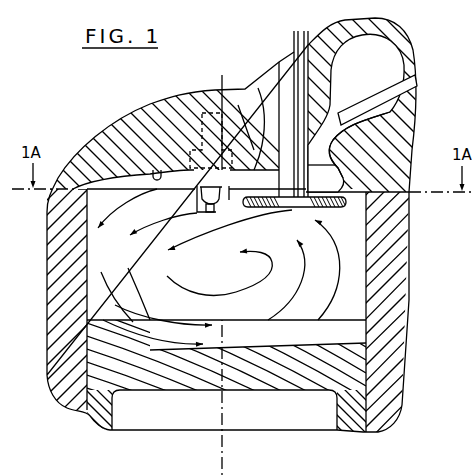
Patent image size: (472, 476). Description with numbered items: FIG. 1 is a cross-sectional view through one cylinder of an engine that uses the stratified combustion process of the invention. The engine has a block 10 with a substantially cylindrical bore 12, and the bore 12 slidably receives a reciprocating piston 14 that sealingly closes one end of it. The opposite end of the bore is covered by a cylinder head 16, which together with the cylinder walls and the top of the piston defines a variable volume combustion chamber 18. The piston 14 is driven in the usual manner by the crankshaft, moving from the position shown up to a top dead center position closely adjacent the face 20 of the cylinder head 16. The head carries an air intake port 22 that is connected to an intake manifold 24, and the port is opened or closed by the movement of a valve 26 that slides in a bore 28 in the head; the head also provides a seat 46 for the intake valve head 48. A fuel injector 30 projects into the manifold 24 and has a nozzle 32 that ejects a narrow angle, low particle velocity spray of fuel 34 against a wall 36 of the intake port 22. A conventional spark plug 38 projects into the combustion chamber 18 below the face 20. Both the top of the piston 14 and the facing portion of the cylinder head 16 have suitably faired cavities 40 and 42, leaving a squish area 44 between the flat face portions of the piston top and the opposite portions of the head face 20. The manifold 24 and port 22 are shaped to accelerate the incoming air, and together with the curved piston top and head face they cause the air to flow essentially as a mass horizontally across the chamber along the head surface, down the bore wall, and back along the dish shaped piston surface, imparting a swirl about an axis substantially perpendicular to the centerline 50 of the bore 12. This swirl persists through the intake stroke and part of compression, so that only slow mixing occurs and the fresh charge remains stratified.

The block 10 is at (394, 345).
The bore 12 is at (370, 267).
The piston 14 is at (349, 395).
The cylinder head 16 is at (383, 199).
The combustion chamber 18 is at (152, 238).
The face 20 is at (127, 190).
The air intake port 22 is at (262, 87).
The intake manifold 24 is at (273, 158).
The valve 26 is at (288, 62).
The bore 28 is at (297, 44).
The fuel injector 30 is at (377, 100).
The nozzle 32 is at (338, 114).
The spray of fuel 34 is at (316, 142).
The wall 36 is at (222, 100).
The spark plug 38 is at (188, 88).
The cavity 40 is at (234, 352).
The cavity 42 is at (153, 170).
The squish area 44 is at (103, 275).
The seat 46 is at (270, 183).
The intake valve head 48 is at (320, 207).
The centerline 50 is at (223, 257).